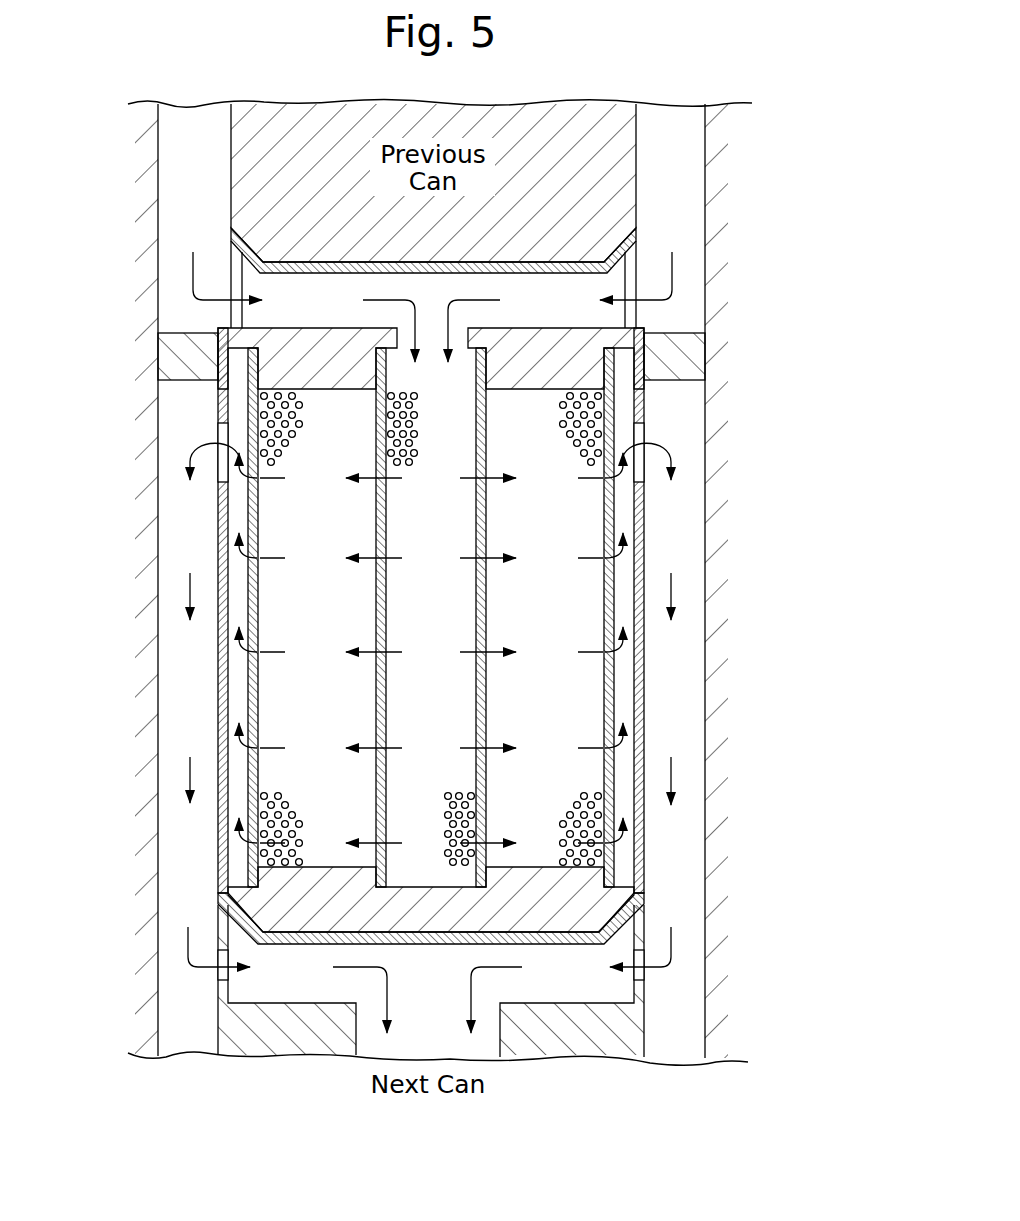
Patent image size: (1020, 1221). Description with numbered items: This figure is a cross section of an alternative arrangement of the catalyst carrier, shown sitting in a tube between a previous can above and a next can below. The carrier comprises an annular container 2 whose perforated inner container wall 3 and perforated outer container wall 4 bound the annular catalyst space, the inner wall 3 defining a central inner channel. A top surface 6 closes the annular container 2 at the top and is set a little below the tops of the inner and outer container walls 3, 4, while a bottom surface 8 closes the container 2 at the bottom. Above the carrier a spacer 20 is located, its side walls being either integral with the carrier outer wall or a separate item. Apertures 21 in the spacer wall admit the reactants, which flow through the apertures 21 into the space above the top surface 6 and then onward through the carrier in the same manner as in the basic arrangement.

The annular container 2 is at (268, 692).
The perforated inner container wall 3 is at (481, 708).
The perforated outer container wall 4 is at (613, 562).
The top surface 6 is at (290, 360).
The bottom surface 8 is at (570, 898).
The spacer 20 is at (633, 236).
The apertures 21 is at (630, 309).